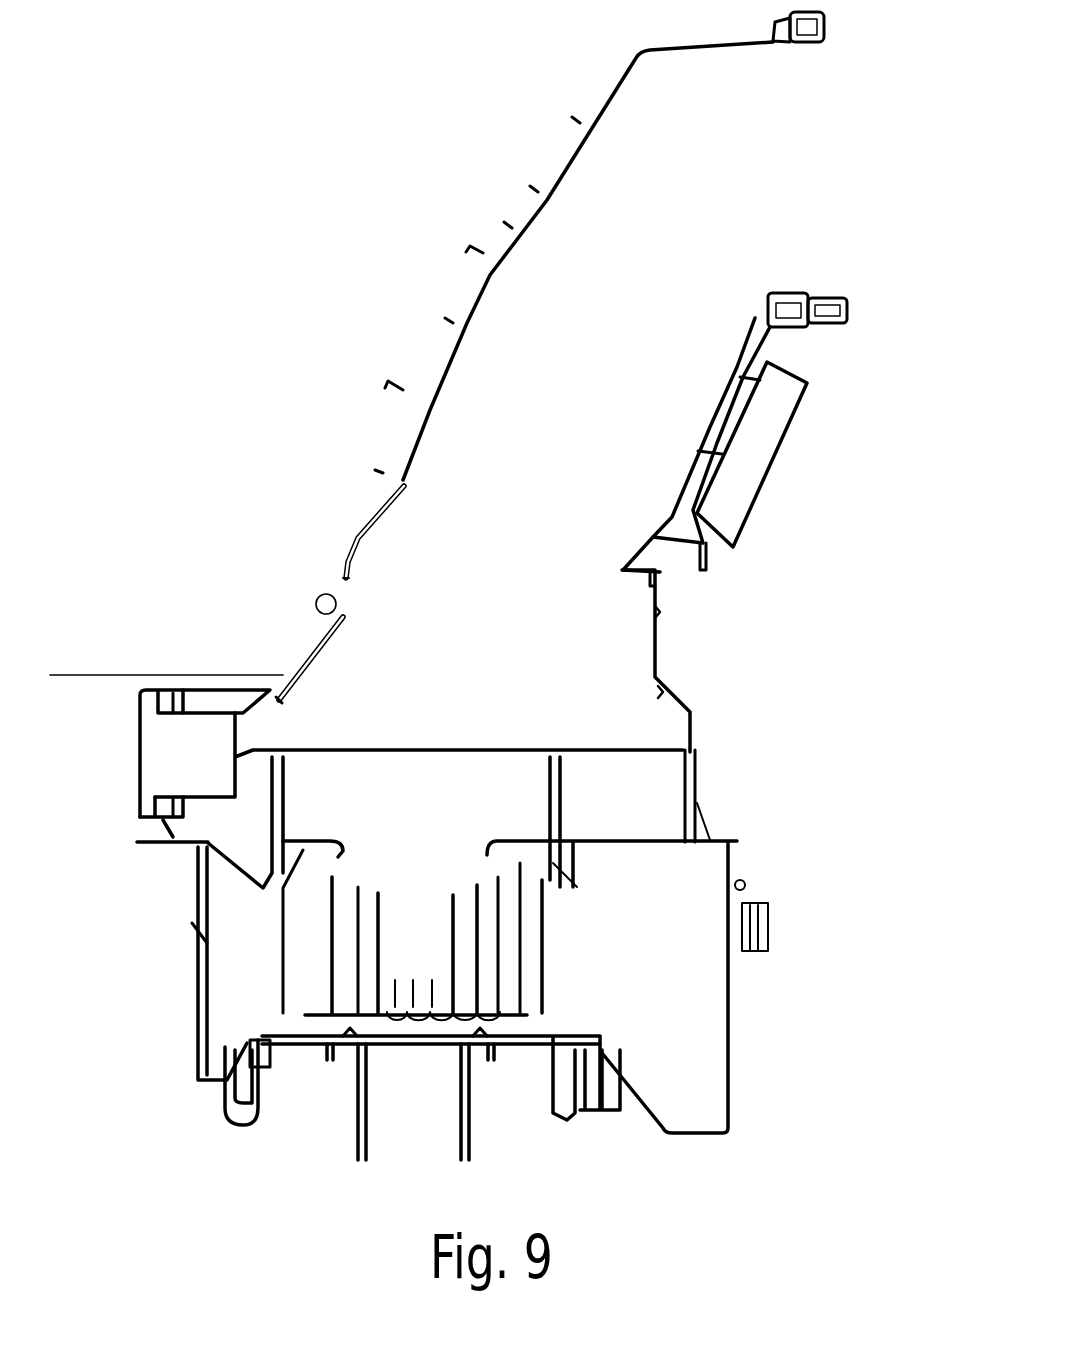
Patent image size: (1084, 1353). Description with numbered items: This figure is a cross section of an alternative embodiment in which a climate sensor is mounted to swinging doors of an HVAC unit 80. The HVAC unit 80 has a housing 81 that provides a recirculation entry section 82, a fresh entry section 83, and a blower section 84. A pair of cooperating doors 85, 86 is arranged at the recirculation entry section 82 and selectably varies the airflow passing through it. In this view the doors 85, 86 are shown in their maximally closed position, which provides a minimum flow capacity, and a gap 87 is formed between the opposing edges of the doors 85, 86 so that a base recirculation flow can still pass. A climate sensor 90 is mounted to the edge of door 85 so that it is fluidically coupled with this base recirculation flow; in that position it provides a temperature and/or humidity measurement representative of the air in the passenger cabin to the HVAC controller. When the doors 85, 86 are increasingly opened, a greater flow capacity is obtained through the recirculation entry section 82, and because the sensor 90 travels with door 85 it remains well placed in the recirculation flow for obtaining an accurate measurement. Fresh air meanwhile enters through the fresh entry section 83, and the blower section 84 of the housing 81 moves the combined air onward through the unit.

The HVAC unit 80 is at (760, 600).
The housing 81 is at (690, 713).
The recirculation entry section 82 is at (448, 602).
The fresh entry section 83 is at (738, 171).
The blower section 84 is at (667, 1030).
The door 85 is at (302, 667).
The door 86 is at (364, 530).
The gap 87 is at (340, 588).
The climate sensor 90 is at (315, 604).